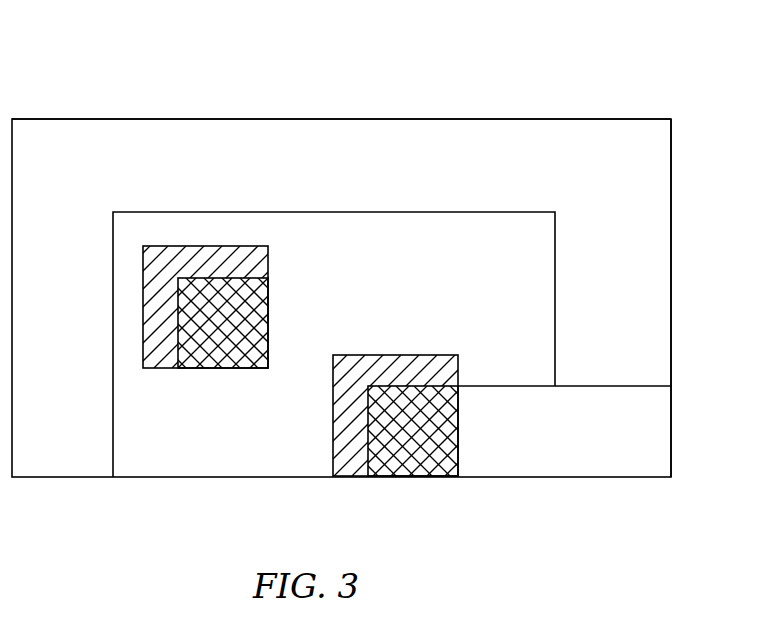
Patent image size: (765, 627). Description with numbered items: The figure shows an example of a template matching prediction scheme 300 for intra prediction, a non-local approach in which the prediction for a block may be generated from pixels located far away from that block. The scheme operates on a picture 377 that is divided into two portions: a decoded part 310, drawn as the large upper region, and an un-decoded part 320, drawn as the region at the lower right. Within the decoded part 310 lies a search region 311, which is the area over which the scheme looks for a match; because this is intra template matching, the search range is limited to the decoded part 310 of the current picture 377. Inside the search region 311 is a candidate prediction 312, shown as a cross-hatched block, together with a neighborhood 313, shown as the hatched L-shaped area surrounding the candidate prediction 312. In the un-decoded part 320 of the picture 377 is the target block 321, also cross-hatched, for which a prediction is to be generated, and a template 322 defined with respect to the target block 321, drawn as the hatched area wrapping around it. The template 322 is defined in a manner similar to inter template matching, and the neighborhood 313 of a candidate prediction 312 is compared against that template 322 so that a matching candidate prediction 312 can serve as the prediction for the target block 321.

The template matching prediction scheme 300 is at (443, 85).
The decoded part 310 is at (318, 170).
The search region 311 is at (460, 257).
The candidate prediction 312 is at (193, 327).
The neighborhood 313 is at (154, 262).
The un-decoded part 320 is at (537, 444).
The target block 321 is at (421, 460).
The template 322 is at (415, 371).
The picture 377 is at (677, 203).